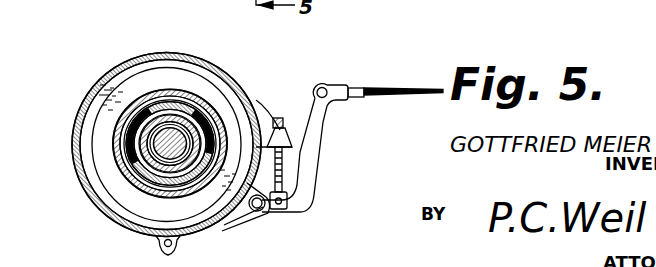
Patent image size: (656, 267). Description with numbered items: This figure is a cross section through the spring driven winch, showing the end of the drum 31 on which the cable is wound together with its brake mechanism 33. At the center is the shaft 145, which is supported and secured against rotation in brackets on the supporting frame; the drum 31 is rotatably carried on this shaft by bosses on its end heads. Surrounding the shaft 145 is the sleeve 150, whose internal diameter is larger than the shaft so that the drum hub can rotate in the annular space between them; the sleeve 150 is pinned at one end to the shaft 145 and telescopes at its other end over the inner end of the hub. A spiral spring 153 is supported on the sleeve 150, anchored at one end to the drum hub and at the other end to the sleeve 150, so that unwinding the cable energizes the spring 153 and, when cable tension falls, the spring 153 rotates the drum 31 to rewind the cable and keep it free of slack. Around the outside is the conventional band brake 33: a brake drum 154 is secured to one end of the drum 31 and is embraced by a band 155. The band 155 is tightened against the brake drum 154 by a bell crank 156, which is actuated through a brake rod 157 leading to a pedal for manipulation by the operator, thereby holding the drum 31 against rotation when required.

The drum 31 is at (178, 125).
The brake mechanism 33 is at (161, 52).
The shaft 145 is at (121, 157).
The sleeve 150 is at (141, 164).
The spiral spring 153 is at (111, 149).
The brake drum 154 is at (117, 83).
The band 155 is at (73, 99).
The bell crank 156 is at (316, 155).
The brake rod 157 is at (413, 87).